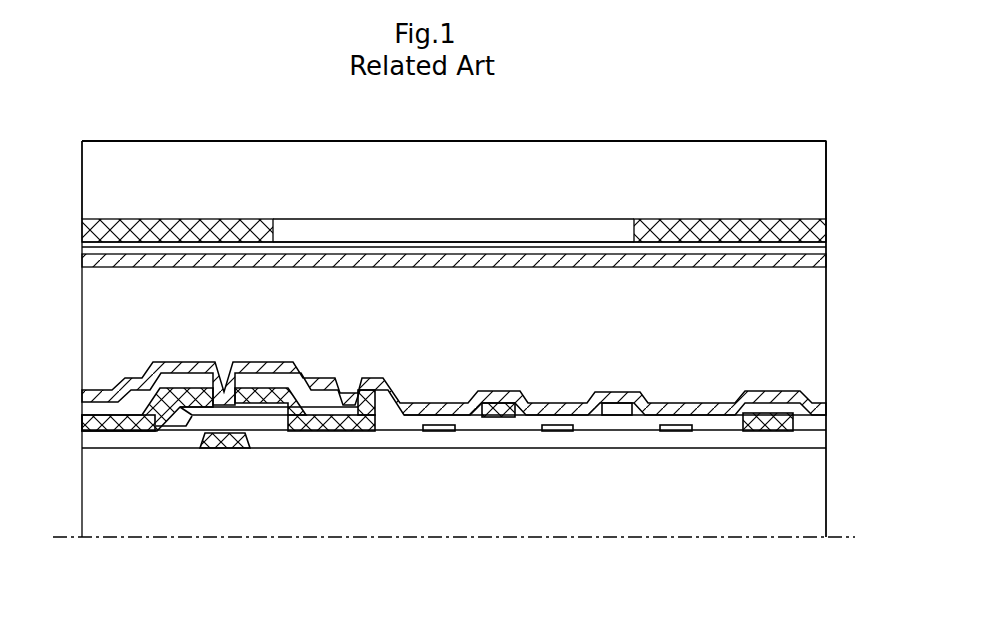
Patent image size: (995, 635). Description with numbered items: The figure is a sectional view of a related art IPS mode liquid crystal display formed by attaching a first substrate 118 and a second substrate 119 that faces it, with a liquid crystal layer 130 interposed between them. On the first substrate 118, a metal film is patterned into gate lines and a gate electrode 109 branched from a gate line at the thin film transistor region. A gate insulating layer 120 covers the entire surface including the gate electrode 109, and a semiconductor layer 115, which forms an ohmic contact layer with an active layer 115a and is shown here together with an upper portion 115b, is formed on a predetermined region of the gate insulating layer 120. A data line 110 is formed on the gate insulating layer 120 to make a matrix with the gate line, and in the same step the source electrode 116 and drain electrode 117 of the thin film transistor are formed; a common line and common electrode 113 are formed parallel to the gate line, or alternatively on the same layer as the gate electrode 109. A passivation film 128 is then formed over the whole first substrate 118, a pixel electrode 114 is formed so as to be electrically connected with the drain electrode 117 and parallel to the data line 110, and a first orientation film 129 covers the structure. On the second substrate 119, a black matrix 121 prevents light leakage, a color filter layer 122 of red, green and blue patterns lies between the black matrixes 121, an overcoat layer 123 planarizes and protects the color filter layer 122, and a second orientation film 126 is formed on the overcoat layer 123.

The gate electrode 109 is at (225, 448).
The data line 110 is at (765, 412).
The common electrode 113 is at (673, 428).
The pixel electrode 114 is at (612, 408).
The semiconductor layer 115 is at (220, 511).
The active layer 115a is at (163, 431).
The upper active layer 115b is at (185, 420).
The source electrode 116 is at (183, 392).
The drain electrode 117 is at (315, 420).
The first substrate 118 is at (826, 487).
The second substrate 119 is at (90, 184).
The gate insulating layer 120 is at (826, 443).
The black matrix 121 is at (83, 230).
The color filter layer 122 is at (466, 230).
The overcoat layer 123 is at (83, 247).
The second orientation film 126 is at (826, 258).
The passivation film 128 is at (826, 421).
The first orientation film 129 is at (483, 392).
The liquid crystal layer 130 is at (826, 307).